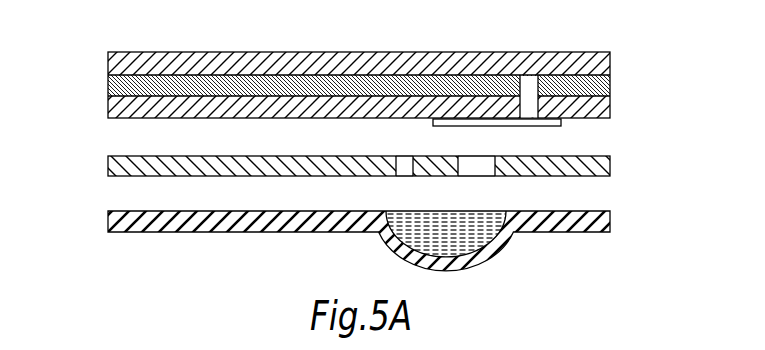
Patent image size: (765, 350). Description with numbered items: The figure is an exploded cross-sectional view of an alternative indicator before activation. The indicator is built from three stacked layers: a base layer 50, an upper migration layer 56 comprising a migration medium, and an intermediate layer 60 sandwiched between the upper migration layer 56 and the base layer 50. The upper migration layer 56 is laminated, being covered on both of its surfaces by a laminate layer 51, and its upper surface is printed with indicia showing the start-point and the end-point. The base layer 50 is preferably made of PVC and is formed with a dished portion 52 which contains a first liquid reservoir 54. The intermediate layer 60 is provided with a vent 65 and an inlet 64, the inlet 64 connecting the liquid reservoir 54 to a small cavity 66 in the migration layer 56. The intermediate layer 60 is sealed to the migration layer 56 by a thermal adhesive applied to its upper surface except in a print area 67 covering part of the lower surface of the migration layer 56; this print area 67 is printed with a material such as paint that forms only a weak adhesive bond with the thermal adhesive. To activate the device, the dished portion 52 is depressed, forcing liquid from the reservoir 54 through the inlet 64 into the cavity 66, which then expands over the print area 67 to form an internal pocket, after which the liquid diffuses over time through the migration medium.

The base layer 50 is at (390, 263).
The laminate layer 51 is at (108, 105).
The dished portion 52 is at (459, 268).
The first liquid reservoir 54 is at (483, 233).
The upper migration layer 56 is at (354, 65).
The intermediate layer 60 is at (390, 166).
The inlet 64 is at (479, 170).
The vent 65 is at (404, 158).
The cavity 66 is at (531, 80).
The print area 67 is at (561, 122).